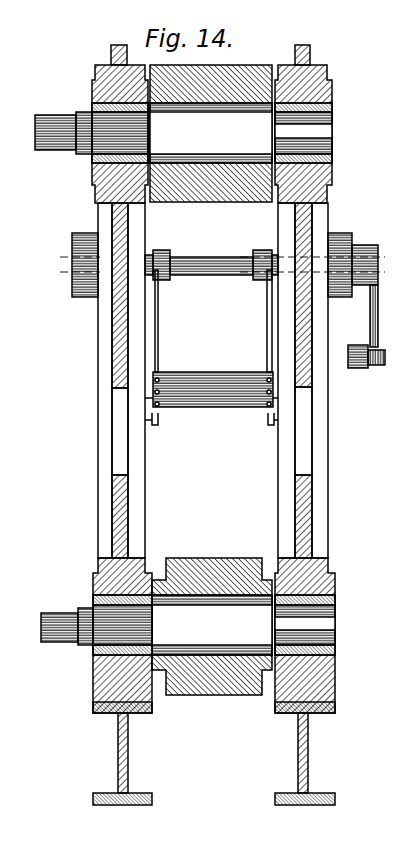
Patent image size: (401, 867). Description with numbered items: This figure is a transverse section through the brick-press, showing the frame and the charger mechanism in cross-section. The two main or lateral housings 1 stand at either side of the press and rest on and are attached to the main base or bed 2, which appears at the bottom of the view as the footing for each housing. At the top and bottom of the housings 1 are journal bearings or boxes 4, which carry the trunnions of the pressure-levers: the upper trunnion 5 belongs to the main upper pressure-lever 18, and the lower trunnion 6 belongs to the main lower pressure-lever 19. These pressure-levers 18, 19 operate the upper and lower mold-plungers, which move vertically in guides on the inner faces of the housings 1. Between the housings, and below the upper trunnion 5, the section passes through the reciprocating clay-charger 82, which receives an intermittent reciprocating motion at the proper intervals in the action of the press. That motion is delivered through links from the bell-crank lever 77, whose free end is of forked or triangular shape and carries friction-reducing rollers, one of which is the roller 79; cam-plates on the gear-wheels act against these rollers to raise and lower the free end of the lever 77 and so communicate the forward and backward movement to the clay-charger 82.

The main or lateral housings 1 is at (86, 451).
The main base or bed 2 is at (214, 759).
The journal bearings or boxes 4 is at (195, 647).
The trunnion 5 is at (211, 133).
The trunnion 6 is at (212, 626).
The main upper pressure-lever 18 is at (183, 134).
The main lower pressure-lever 19 is at (214, 624).
The bell-crank lever 77 is at (261, 308).
The friction-reducing roller 79 is at (365, 369).
The reciprocating clay-charger 82 is at (211, 398).